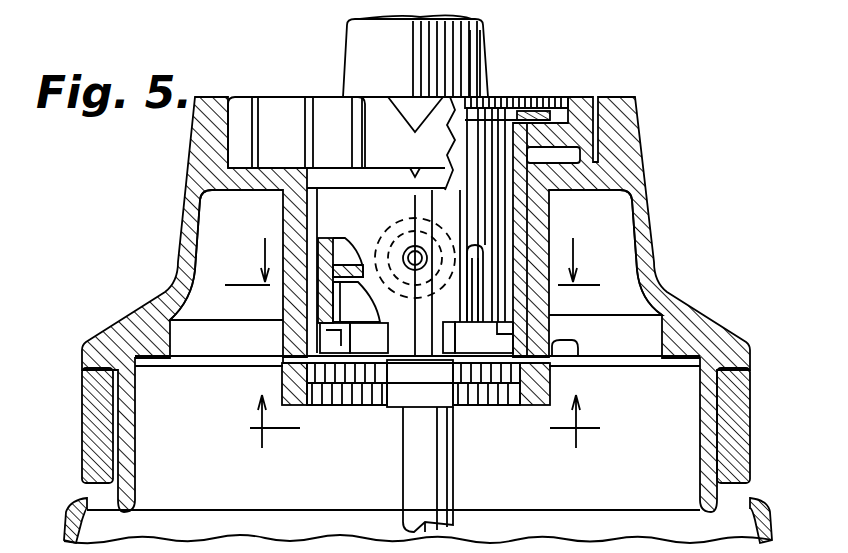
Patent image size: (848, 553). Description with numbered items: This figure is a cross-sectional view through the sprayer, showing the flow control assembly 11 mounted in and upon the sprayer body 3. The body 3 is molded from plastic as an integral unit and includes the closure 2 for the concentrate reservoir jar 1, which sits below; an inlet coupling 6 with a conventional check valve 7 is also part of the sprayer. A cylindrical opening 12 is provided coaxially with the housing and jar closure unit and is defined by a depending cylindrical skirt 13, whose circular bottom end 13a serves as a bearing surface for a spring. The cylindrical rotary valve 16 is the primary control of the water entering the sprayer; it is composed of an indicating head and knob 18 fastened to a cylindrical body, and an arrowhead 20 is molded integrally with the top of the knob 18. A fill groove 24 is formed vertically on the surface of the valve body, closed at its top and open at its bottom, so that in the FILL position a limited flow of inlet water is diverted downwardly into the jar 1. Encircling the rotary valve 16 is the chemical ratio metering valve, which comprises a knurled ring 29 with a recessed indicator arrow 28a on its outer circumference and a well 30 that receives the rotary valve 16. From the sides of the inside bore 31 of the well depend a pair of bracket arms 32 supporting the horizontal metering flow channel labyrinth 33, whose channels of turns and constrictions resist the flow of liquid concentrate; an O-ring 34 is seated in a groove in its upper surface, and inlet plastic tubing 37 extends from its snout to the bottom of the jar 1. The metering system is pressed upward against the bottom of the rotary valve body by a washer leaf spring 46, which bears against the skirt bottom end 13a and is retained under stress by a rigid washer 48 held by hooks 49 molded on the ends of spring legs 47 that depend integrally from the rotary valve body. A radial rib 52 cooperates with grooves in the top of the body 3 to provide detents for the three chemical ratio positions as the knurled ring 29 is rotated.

The concentrate reservoir jar 1 is at (66, 521).
The closure 2 is at (82, 390).
The body 3 is at (685, 227).
The inlet coupling 6 is at (423, 427).
The check valve 7 is at (411, 261).
The flow control assembly 11 is at (232, 64).
The cylindrical opening 12 is at (306, 206).
The cylindrical skirt 13 is at (290, 333).
The circular bottom end of skirt 13a is at (577, 350).
The cylindrical rotary valve 16 is at (504, 58).
The indicating head and knob 18 is at (478, 45).
The arrowhead 20 is at (350, 22).
The fill groove 24 is at (470, 303).
The recessed indicator arrow 28a is at (405, 132).
The knurled ring 29 is at (287, 105).
The well 30 is at (545, 100).
The inside bore of the well 31 is at (470, 141).
The bracket arms 32 is at (322, 242).
The metering flow channel labyrinth 33 is at (404, 346).
The O-ring 34 is at (345, 297).
The inlet plastic tubing 37 is at (410, 481).
The washer leaf spring 46 is at (290, 362).
The spring legs 47 is at (368, 380).
The rigid washer 48 is at (540, 400).
The hooks 49 is at (408, 398).
The radial rib 52 is at (412, 189).